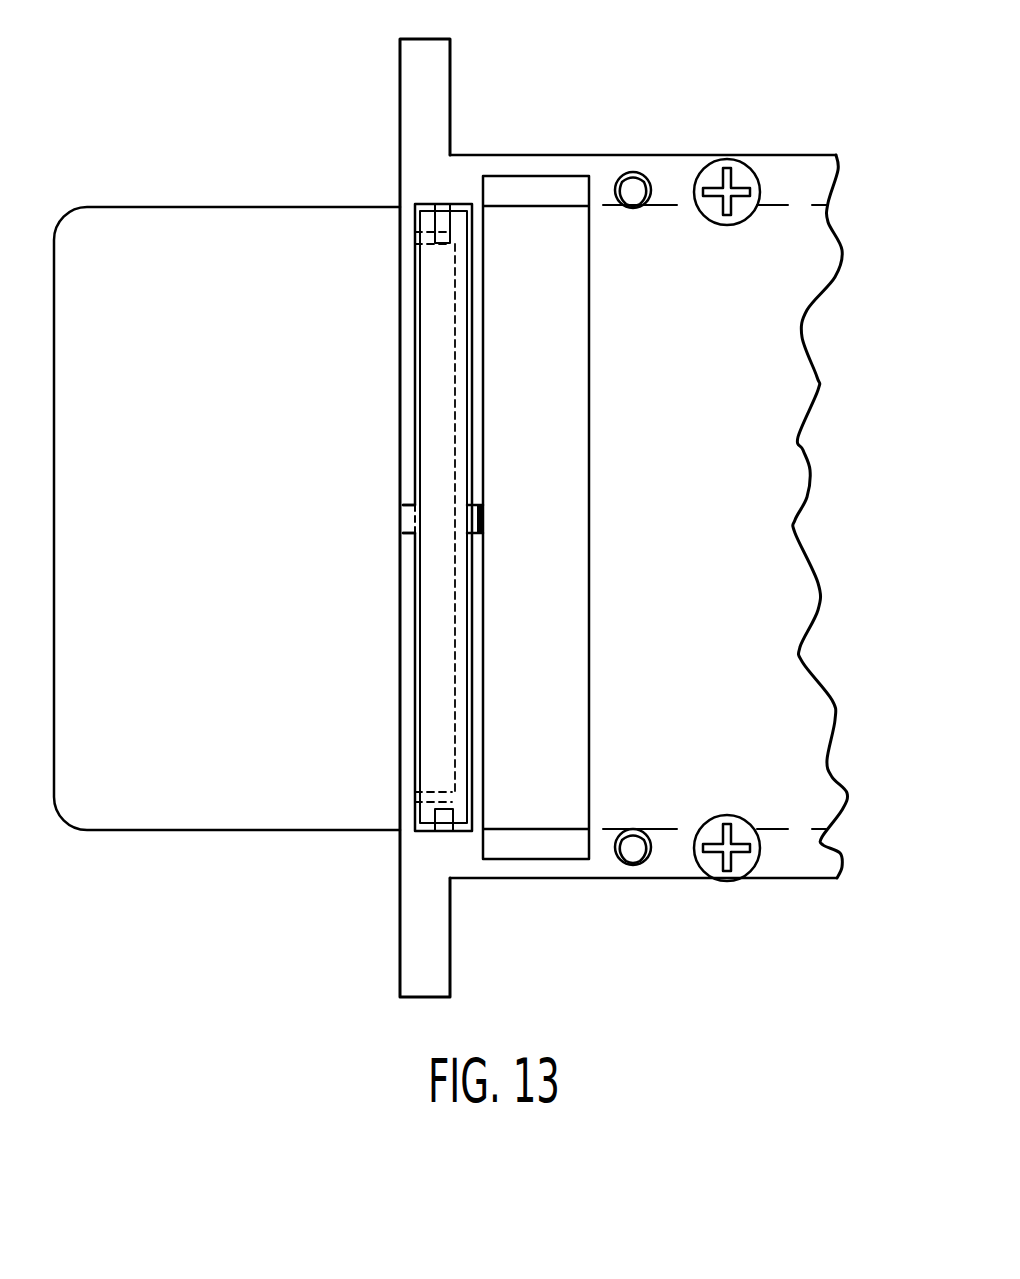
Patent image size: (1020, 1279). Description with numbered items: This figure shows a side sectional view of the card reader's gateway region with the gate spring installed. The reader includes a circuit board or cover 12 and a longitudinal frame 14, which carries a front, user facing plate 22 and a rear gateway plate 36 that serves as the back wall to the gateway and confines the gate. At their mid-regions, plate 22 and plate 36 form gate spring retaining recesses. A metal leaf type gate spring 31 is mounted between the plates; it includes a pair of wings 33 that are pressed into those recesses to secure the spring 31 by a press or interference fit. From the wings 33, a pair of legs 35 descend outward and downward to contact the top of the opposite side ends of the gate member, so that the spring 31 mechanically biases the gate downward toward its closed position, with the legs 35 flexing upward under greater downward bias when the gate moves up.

The circuit board or cover 12 is at (750, 502).
The longitudinal frame 14 is at (533, 165).
The front user facing plate 22 is at (405, 268).
The gate spring 31 is at (430, 642).
The wings 33 is at (407, 517).
The legs 35 is at (432, 360).
The rear gateway plate 36 is at (477, 275).